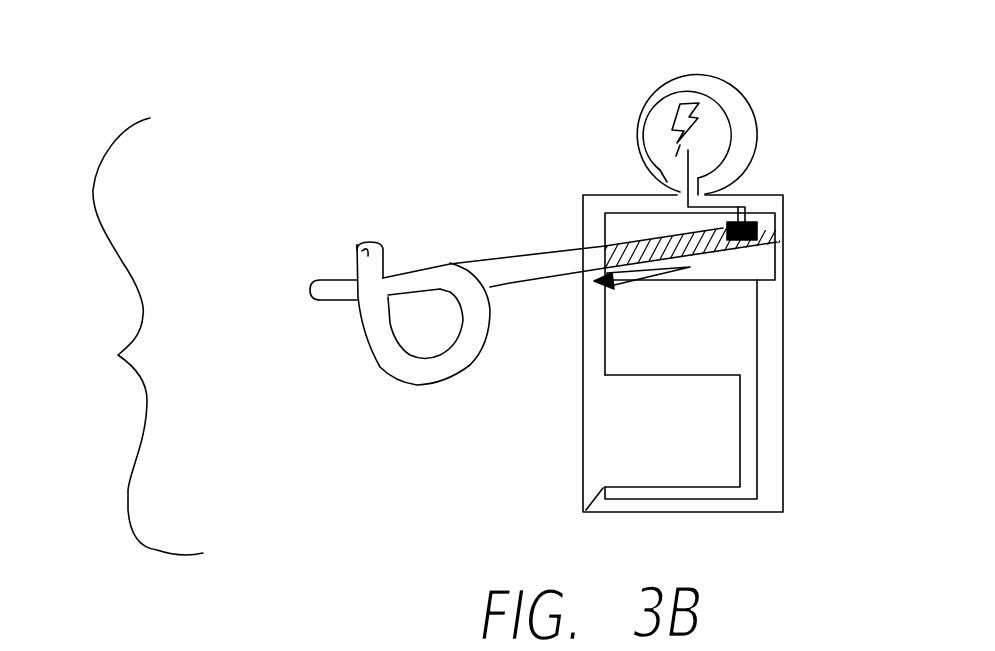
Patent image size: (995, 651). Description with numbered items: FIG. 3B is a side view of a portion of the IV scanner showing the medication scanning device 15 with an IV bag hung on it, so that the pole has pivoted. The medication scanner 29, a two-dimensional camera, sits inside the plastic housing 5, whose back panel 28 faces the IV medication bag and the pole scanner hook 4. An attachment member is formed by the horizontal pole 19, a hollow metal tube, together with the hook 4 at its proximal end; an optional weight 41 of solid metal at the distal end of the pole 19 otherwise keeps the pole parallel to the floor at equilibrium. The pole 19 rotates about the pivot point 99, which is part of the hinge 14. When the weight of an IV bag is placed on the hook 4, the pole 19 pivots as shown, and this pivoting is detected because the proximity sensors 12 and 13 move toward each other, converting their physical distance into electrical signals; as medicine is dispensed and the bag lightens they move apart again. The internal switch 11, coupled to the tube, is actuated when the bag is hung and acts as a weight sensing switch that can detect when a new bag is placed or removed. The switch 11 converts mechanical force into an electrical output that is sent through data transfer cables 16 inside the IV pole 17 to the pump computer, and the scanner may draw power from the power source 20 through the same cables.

The pole scanner hook 4 is at (363, 243).
The housing 5 is at (768, 428).
The internal switch 11 is at (742, 226).
The proximity sensor 12 is at (757, 236).
The proximity sensor 13 is at (760, 240).
The hinge 14 is at (677, 282).
The medication scanning device 15 is at (128, 336).
The data transfer cables 16 is at (750, 205).
The IV pole 17 is at (720, 80).
The horizontal pole 19 is at (517, 257).
The power source 20 is at (700, 107).
The back panel 28 is at (605, 375).
The medication scanner 29 is at (587, 433).
The optional weight 41 is at (633, 240).
The pivot point 99 is at (597, 283).